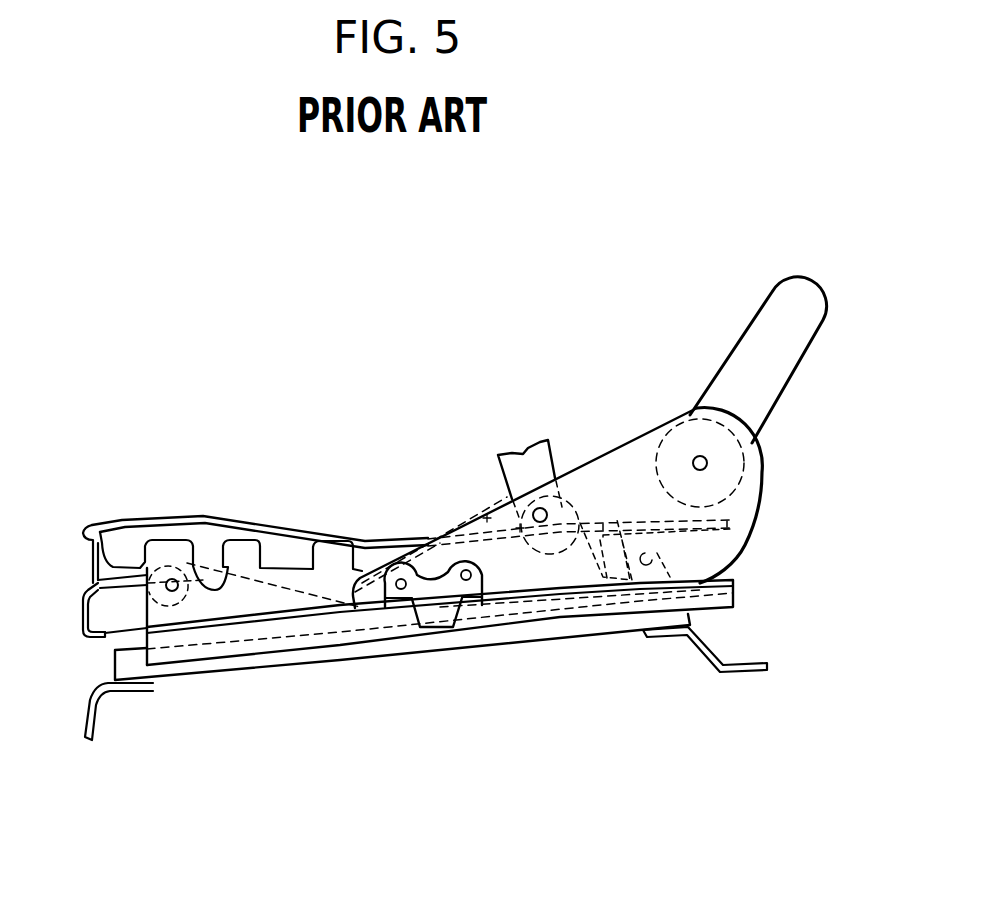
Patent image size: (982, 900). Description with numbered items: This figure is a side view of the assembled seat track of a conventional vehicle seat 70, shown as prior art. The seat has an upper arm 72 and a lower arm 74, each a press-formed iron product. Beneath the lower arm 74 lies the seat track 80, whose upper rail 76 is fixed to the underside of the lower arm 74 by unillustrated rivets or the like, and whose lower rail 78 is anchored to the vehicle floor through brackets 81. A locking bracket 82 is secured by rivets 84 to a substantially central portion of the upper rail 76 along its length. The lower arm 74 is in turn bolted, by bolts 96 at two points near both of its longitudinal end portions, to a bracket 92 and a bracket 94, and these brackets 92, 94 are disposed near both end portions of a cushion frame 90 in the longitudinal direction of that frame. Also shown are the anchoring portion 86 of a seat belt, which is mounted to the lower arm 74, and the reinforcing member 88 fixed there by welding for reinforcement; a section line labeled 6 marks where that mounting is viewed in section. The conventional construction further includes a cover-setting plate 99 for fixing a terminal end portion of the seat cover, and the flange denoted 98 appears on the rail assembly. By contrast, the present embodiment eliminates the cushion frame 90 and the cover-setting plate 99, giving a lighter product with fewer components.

The vehicle seat 70 is at (497, 407).
The upper arm 72 is at (760, 378).
The lower arm 74 is at (740, 497).
The upper rail 76 is at (690, 628).
The lower rail 78 is at (611, 626).
The seat track 80 is at (682, 729).
The brackets 81 is at (100, 700).
The locking bracket 82 is at (430, 628).
The rivets 84 is at (400, 593).
The anchoring portion 86 is at (550, 457).
The reinforcing member 88 is at (478, 506).
The cushion frame 90 is at (200, 540).
The bracket 92 is at (148, 570).
The bracket 94 is at (737, 549).
The bolts 96 is at (176, 592).
The hemmed flange 98 is at (93, 560).
The cover-setting plate 99 is at (82, 630).
The section line 6- 6 is at (542, 497).